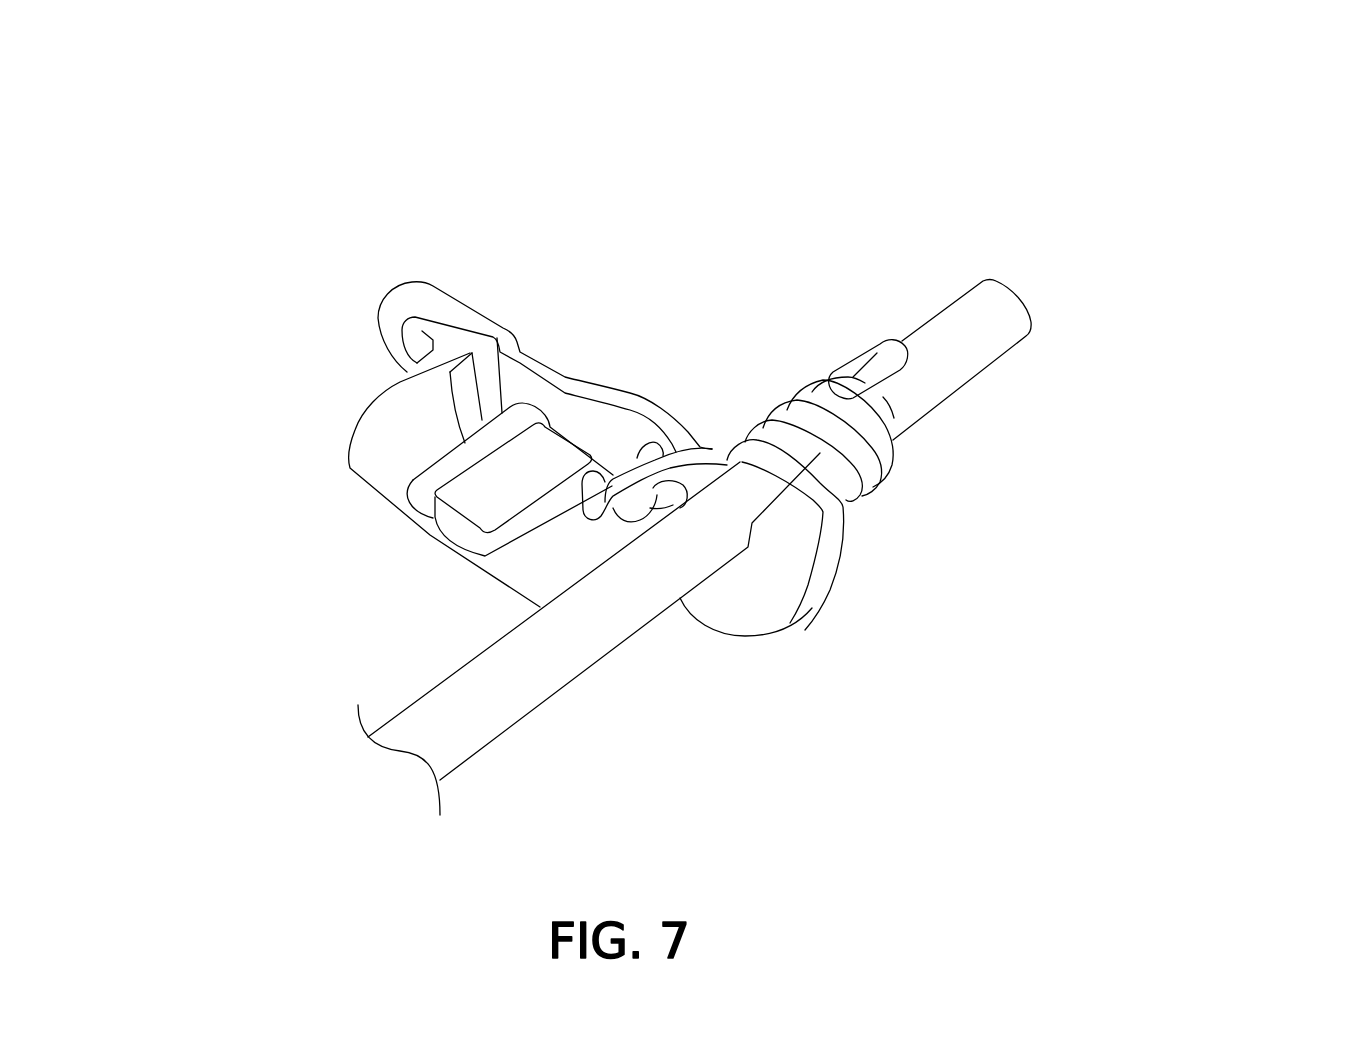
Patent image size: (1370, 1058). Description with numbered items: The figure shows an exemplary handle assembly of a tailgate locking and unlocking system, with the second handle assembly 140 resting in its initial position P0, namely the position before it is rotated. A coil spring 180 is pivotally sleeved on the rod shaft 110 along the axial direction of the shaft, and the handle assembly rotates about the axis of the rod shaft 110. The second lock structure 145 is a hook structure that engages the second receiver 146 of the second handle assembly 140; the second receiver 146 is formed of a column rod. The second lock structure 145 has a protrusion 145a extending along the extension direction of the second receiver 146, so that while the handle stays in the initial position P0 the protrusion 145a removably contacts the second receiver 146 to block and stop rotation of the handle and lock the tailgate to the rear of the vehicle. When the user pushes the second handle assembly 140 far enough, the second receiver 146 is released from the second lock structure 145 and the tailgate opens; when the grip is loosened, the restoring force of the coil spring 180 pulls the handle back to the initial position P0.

The rod shaft 110 is at (990, 320).
The second handle assembly 140 is at (603, 392).
The second receiver 146 is at (507, 428).
The second lock structure 145 is at (787, 597).
The protrusion 145a is at (480, 500).
The coil spring 180 is at (820, 407).
The initial position P0 is at (1210, 147).